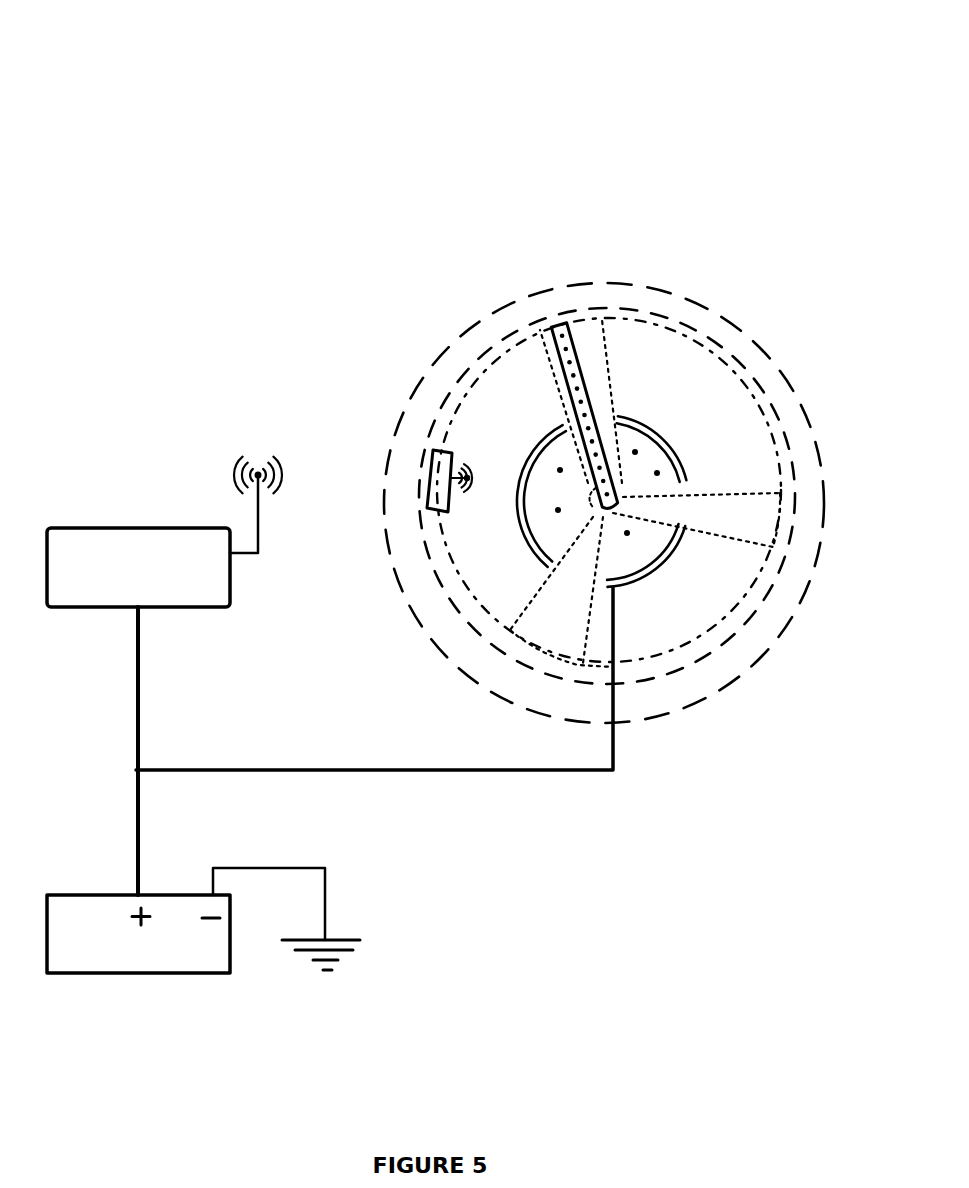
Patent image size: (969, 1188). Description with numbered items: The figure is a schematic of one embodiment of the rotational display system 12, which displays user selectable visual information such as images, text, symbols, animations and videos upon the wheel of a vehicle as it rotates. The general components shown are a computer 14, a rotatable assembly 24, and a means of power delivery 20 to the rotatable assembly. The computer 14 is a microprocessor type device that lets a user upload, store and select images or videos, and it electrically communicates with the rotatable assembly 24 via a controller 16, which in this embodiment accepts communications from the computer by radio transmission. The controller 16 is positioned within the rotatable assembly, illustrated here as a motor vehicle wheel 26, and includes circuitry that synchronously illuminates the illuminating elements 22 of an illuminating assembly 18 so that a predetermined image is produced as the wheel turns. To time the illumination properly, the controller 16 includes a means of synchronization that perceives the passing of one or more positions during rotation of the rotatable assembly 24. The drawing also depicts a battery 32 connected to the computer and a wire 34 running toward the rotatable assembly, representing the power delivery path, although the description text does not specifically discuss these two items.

The rotational display system 12 is at (420, 125).
The computer 14 is at (85, 538).
The controller 16 is at (430, 462).
The illuminating assembly 18 is at (585, 382).
The means of power delivery 20 is at (658, 430).
The illuminating elements 22 is at (566, 326).
The rotatable assembly 24 is at (434, 335).
The motor vehicle wheel 26 is at (742, 517).
The battery 32 is at (173, 950).
The wire 34 is at (432, 772).